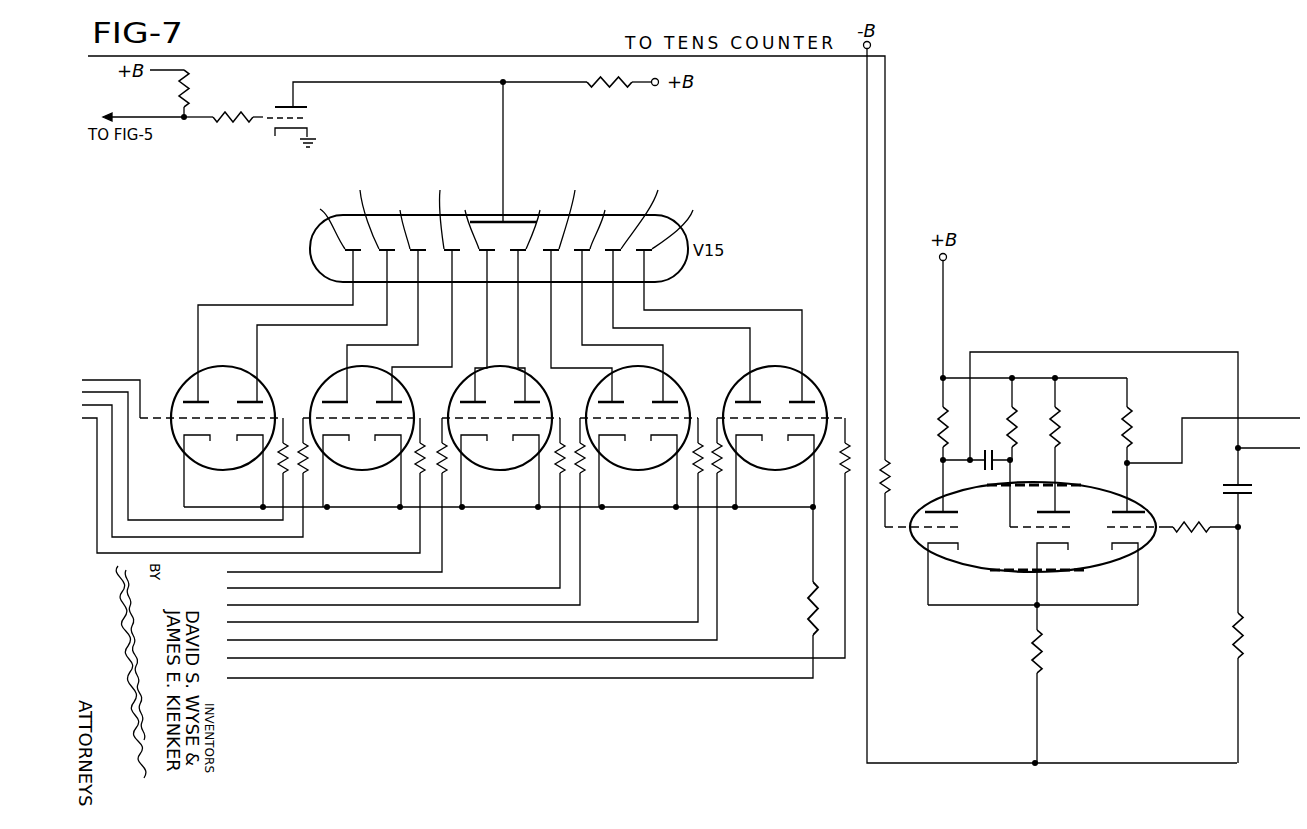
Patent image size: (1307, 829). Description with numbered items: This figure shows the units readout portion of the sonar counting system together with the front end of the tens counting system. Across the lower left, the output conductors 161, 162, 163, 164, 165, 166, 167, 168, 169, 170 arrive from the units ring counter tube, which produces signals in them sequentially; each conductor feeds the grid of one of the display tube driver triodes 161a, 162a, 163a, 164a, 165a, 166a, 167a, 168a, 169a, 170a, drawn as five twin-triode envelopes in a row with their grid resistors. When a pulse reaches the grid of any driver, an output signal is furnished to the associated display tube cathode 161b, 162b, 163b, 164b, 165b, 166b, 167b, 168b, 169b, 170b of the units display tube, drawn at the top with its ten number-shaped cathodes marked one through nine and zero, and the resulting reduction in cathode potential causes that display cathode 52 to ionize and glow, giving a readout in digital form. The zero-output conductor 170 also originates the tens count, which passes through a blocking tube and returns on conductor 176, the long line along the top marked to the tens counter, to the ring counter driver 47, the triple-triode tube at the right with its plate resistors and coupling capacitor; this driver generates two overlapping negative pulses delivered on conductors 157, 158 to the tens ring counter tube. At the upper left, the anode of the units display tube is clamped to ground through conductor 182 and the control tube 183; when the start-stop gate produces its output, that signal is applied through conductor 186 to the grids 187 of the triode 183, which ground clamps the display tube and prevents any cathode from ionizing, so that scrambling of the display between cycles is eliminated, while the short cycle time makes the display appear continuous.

The ring counter driver 47 is at (984, 611).
The display tube cathode 52 is at (303, 242).
The conductor 157 is at (1282, 450).
The conductor 158 is at (1282, 418).
The output conductor 161 is at (155, 420).
The output conductor 162 is at (147, 520).
The output conductor 163 is at (305, 525).
The output conductor 164 is at (418, 537).
The output conductor 165 is at (444, 539).
The output conductor 166 is at (558, 562).
The output conductor 167 is at (582, 568).
The output conductor 168 is at (696, 590).
The output conductor 169 is at (718, 592).
The 0-output conductor 170 is at (762, 657).
The display tube driver triode 161a is at (175, 400).
The display tube driver triode 162a is at (272, 398).
The display tube driver triode 163a is at (343, 460).
The display tube driver triode 164a is at (403, 406).
The display tube driver triode 165a is at (477, 460).
The display tube driver triode 166a is at (550, 407).
The display tube driver triode 167a is at (617, 460).
The display tube driver triode 168a is at (685, 396).
The display tube driver triode 169a is at (752, 460).
The display tube driver triode 170a is at (818, 394).
The display tube cathode 161b is at (326, 220).
The display tube cathode 162b is at (366, 208).
The display tube cathode 163b is at (405, 220).
The display tube cathode 164b is at (443, 208).
The display tube cathode 165b is at (475, 220).
The display tube cathode 166b is at (536, 220).
The display tube cathode 167b is at (574, 208).
The display tube cathode 168b is at (604, 220).
The display tube cathode 169b is at (646, 208).
The display tube cathode 170b is at (682, 220).
The conductor 176 is at (392, 55).
The conductor 182 is at (503, 103).
The control tube 183 is at (290, 135).
The conductor 186 is at (158, 117).
The grids 187 is at (310, 117).